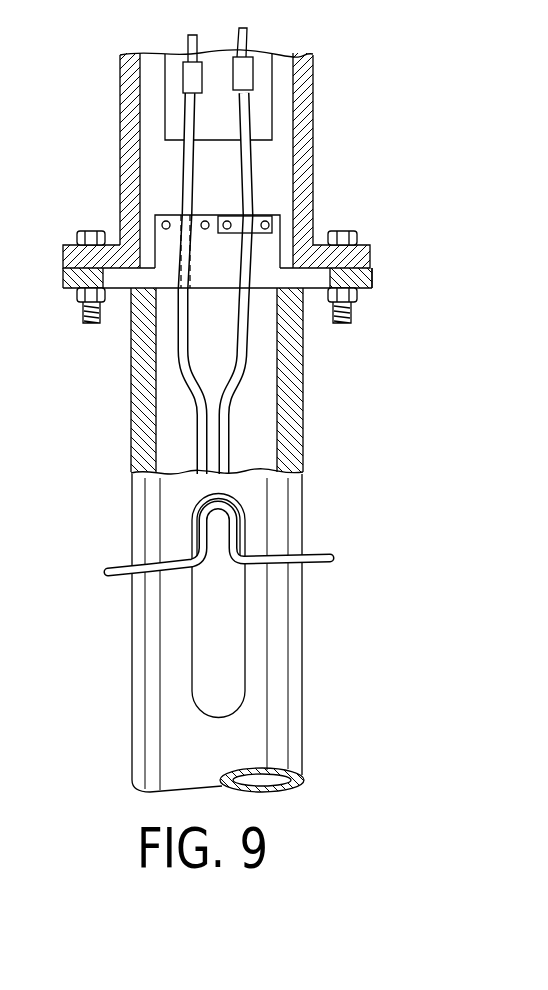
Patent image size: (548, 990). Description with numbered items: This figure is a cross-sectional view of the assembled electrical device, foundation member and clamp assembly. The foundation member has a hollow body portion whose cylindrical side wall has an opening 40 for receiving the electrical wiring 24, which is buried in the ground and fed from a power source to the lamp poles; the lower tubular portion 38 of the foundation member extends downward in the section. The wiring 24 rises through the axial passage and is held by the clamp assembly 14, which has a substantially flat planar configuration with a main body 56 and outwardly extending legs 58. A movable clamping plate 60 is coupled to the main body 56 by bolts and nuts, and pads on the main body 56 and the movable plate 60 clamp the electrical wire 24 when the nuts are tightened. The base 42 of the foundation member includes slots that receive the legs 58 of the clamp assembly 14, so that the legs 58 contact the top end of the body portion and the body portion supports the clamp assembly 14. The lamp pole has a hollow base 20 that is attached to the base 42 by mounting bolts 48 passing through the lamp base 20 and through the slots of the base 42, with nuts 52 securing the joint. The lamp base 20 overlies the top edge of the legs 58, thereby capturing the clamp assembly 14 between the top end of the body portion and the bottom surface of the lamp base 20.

The clamp assembly 14 is at (166, 209).
The base 20 is at (315, 88).
The electrical wiring 24 is at (190, 420).
The lower tube 38 is at (253, 443).
The opening 40 is at (232, 640).
The base 42 is at (372, 279).
The mounting bolts 48 is at (77, 238).
The lower nuts 52 is at (75, 294).
The main body 56 is at (266, 250).
The legs 58 is at (118, 284).
The movable clamping plate 60 is at (266, 212).